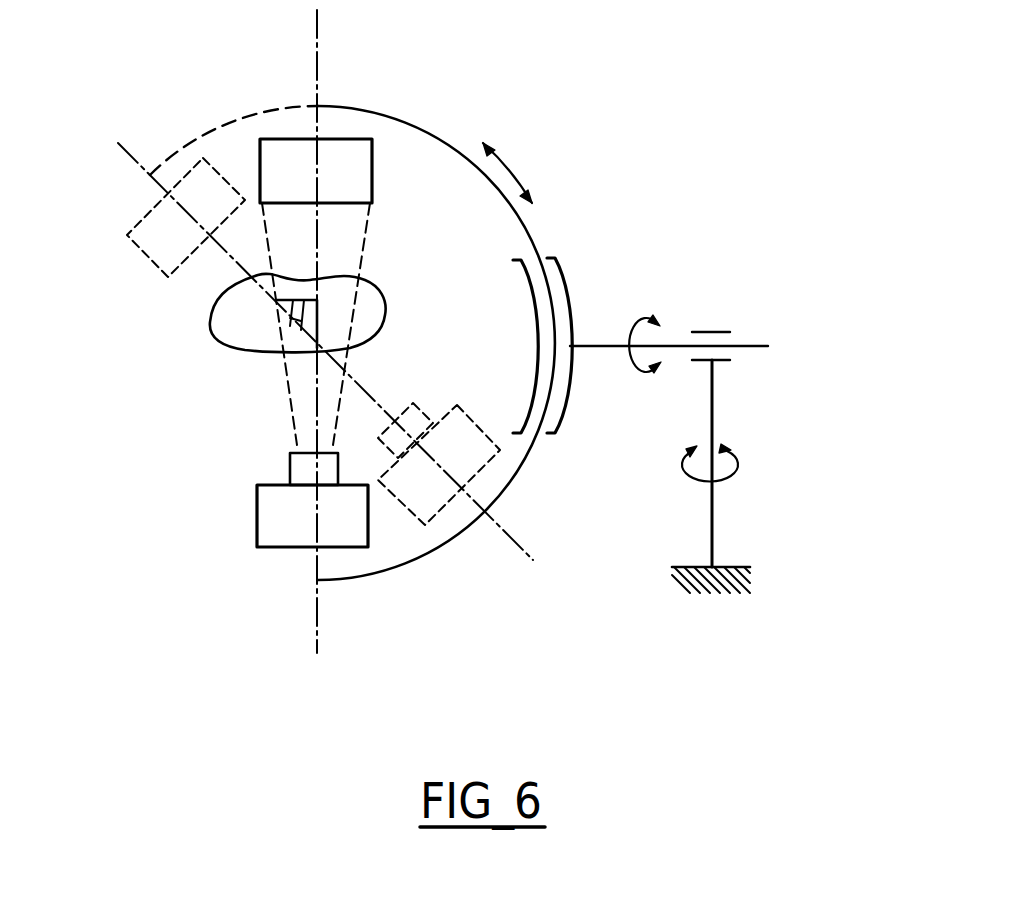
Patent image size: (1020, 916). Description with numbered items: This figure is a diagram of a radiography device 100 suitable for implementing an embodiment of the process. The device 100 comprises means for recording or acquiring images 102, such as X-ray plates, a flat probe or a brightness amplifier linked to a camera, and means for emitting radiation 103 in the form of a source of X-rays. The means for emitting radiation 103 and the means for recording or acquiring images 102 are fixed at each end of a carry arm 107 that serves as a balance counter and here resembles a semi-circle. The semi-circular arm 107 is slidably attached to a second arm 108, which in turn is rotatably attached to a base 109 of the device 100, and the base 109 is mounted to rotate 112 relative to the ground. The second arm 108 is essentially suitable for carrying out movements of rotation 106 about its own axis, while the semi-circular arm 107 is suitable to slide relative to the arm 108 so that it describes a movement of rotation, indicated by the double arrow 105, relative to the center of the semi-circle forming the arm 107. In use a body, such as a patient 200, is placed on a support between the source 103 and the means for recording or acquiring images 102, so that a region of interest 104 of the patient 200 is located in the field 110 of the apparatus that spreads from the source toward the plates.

The radiography device 100 is at (640, 147).
The means for recording or acquiring images 102 is at (362, 158).
The means for emitting radiation 103 is at (272, 512).
The region of interest 104 is at (322, 318).
The rotation direction of support 105 is at (513, 167).
The movements of rotation 106 is at (632, 320).
The carry arm 107 is at (520, 472).
The second arm 108 is at (680, 342).
The base 109 is at (712, 398).
The field 110 is at (367, 240).
The rotation 112 is at (720, 478).
The patient 200 is at (363, 332).